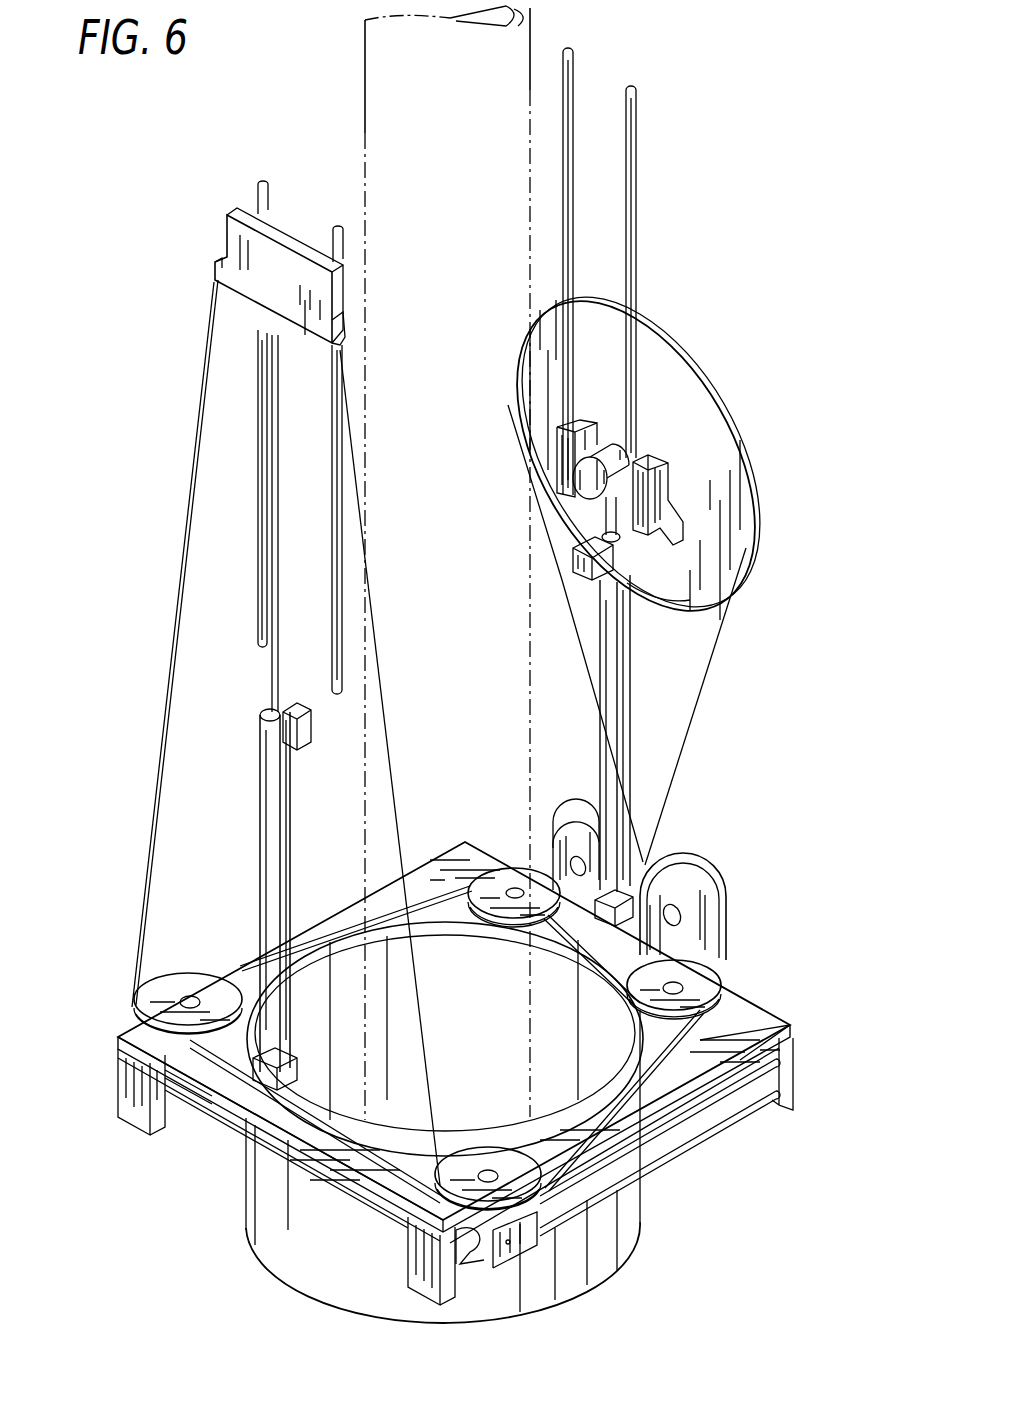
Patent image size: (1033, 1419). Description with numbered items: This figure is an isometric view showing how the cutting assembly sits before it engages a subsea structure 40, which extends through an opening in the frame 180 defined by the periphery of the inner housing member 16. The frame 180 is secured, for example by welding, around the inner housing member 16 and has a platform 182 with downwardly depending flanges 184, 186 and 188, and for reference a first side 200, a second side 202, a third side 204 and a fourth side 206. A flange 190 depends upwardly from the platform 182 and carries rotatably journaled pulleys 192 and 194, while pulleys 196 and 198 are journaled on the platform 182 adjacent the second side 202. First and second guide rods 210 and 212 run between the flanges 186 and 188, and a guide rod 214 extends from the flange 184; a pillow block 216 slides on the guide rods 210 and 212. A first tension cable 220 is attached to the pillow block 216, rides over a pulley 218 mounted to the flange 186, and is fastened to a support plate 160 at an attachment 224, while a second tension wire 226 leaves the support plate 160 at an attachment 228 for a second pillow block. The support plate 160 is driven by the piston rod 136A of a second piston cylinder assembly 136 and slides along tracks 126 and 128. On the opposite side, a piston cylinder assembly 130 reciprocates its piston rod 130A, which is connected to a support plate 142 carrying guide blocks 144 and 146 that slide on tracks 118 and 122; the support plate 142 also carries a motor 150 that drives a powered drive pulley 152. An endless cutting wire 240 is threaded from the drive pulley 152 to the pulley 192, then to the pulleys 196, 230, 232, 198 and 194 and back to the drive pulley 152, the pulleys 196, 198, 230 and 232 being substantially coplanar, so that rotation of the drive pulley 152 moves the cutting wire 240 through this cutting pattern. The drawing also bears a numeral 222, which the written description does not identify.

The inner housing member 16 is at (328, 1277).
The subsea structure 40 is at (365, 68).
The track 118 is at (637, 165).
The track 122 is at (575, 80).
The track 126 is at (350, 415).
The track 128 is at (258, 530).
The piston cylinder assembly 130 is at (617, 722).
The piston rod 130A is at (575, 550).
The second piston cylinder assembly 136 is at (260, 790).
The piston rod 136A is at (275, 690).
The support plate 142 is at (680, 505).
The guide block 144 is at (652, 585).
The guide block 146 is at (563, 455).
The motor 150 is at (590, 475).
The drive pulley 152 is at (683, 347).
The support plate 160 is at (287, 270).
The frame 180 is at (183, 1160).
The platform 182 is at (287, 1127).
The flange 184 is at (118, 1078).
The flange 186 is at (428, 1245).
The flange 188 is at (793, 1077).
The flange 190 is at (658, 888).
The pulley 192 is at (722, 912).
The pulley 194 is at (577, 802).
The pulley 196 is at (700, 985).
The pulley 198 is at (490, 873).
The first side 200 is at (333, 1178).
The second side 202 is at (765, 1030).
The third side 204 is at (663, 1105).
The fourth side 206 is at (347, 905).
The first guide rod 210 is at (785, 1100).
The second guide rod 212 is at (740, 1117).
The guide rod 214 is at (172, 1118).
The pillow block 216 is at (515, 1250).
The pulley 218 is at (488, 1146).
The first tension wire 220 is at (458, 1252).
The plate 222 is at (430, 1012).
The cable attachment 224 is at (345, 322).
The second tension wire 226 is at (196, 445).
The wire attachment 228 is at (215, 268).
The pulley 230 is at (533, 1187).
The pulley 232 is at (160, 995).
The endless cutting wire 240 is at (705, 696).